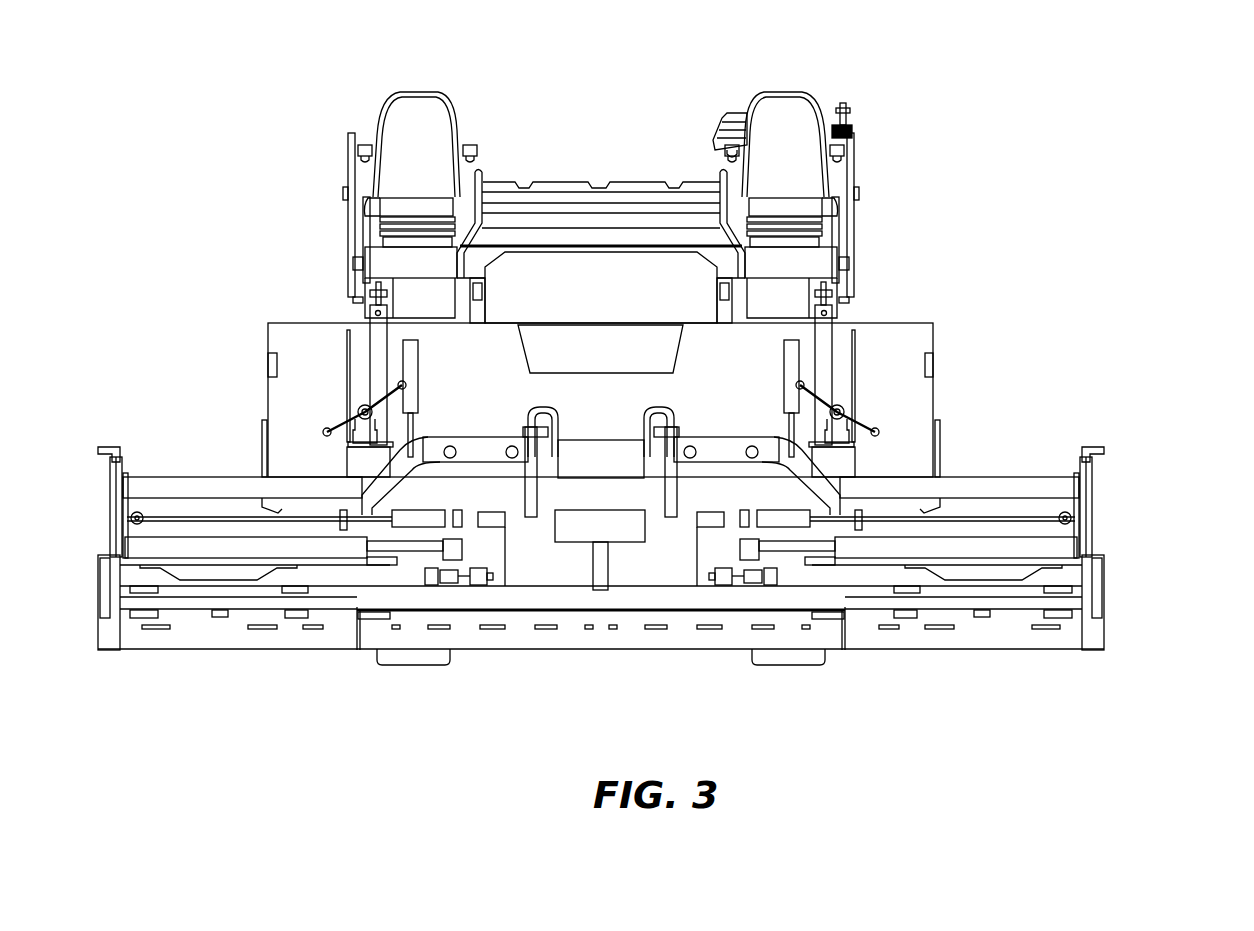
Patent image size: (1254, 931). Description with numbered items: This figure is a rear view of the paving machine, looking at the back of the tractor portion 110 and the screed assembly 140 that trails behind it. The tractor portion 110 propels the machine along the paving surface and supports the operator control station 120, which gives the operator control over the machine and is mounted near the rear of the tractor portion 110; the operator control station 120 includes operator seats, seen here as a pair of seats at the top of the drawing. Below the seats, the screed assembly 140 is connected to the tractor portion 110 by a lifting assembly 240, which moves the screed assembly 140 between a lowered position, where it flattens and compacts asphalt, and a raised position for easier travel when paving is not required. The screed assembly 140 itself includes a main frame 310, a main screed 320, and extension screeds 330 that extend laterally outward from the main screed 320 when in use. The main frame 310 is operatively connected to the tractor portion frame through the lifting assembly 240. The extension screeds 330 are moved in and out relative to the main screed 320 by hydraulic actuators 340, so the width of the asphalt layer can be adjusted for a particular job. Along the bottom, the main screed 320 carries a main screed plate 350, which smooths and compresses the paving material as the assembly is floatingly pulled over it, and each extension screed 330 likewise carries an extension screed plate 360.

The tractor portion 110 is at (932, 323).
The operator control station 120 is at (395, 103).
The screed assembly 140 is at (1128, 517).
The lifting assembly 240 is at (378, 332).
The main frame 310 is at (615, 472).
The main screed 320 is at (592, 598).
The extension screed 330 is at (978, 649).
The hydraulic actuator 340 is at (213, 520).
The main screed plate 350 is at (687, 650).
The extension screed plate 360 is at (257, 650).